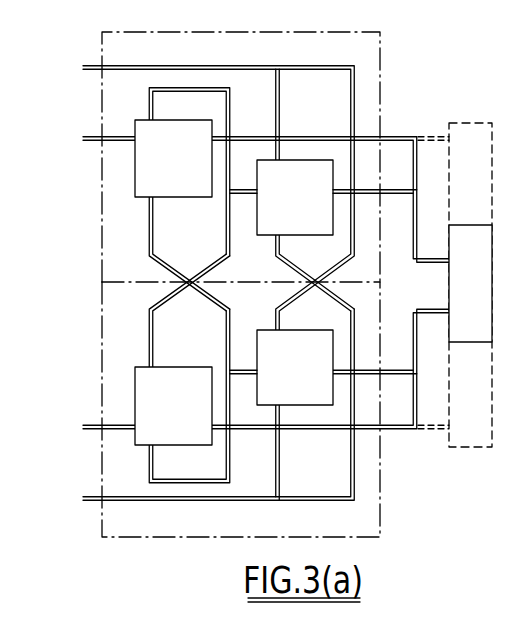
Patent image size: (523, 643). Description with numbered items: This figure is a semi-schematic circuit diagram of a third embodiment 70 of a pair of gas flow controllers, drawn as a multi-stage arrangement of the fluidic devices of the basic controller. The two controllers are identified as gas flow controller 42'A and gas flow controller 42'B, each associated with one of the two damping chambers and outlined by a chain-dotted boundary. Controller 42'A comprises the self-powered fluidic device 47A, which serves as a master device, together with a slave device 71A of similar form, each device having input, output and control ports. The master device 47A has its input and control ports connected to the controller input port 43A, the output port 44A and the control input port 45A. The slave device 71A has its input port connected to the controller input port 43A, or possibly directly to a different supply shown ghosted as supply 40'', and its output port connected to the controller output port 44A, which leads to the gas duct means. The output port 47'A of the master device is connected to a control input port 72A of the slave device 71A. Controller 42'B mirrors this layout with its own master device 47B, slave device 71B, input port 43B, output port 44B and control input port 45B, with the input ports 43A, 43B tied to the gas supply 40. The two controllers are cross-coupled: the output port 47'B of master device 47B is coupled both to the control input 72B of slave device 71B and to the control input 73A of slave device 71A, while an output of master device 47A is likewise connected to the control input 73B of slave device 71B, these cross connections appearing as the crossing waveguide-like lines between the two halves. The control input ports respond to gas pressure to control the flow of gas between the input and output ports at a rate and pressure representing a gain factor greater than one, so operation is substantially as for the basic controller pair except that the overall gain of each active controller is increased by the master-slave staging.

The third embodiment of the controller pair 70 is at (428, 495).
The gas flow controller 42'A is at (279, 145).
The gas flow controller 42'B is at (267, 414).
The control input port 45A is at (100, 66).
The control input port 45B is at (100, 497).
The control input port 72A is at (150, 118).
The control input port 72B is at (148, 460).
The output port 44A is at (100, 139).
The output port 44B is at (100, 427).
The control input 73A is at (150, 197).
The control input 73B is at (150, 366).
The slave device 71A is at (170, 169).
The slave device 71B is at (170, 423).
The self-powered fluidic device 47A is at (294, 205).
The master device 47B is at (292, 382).
The output port of the master device 47'A is at (212, 217).
The output port of master device 47'B is at (209, 345).
The input port 43A is at (390, 197).
The input port 43B is at (397, 377).
The gas supply 40 is at (470, 283).
The different supply 40'' is at (477, 264).